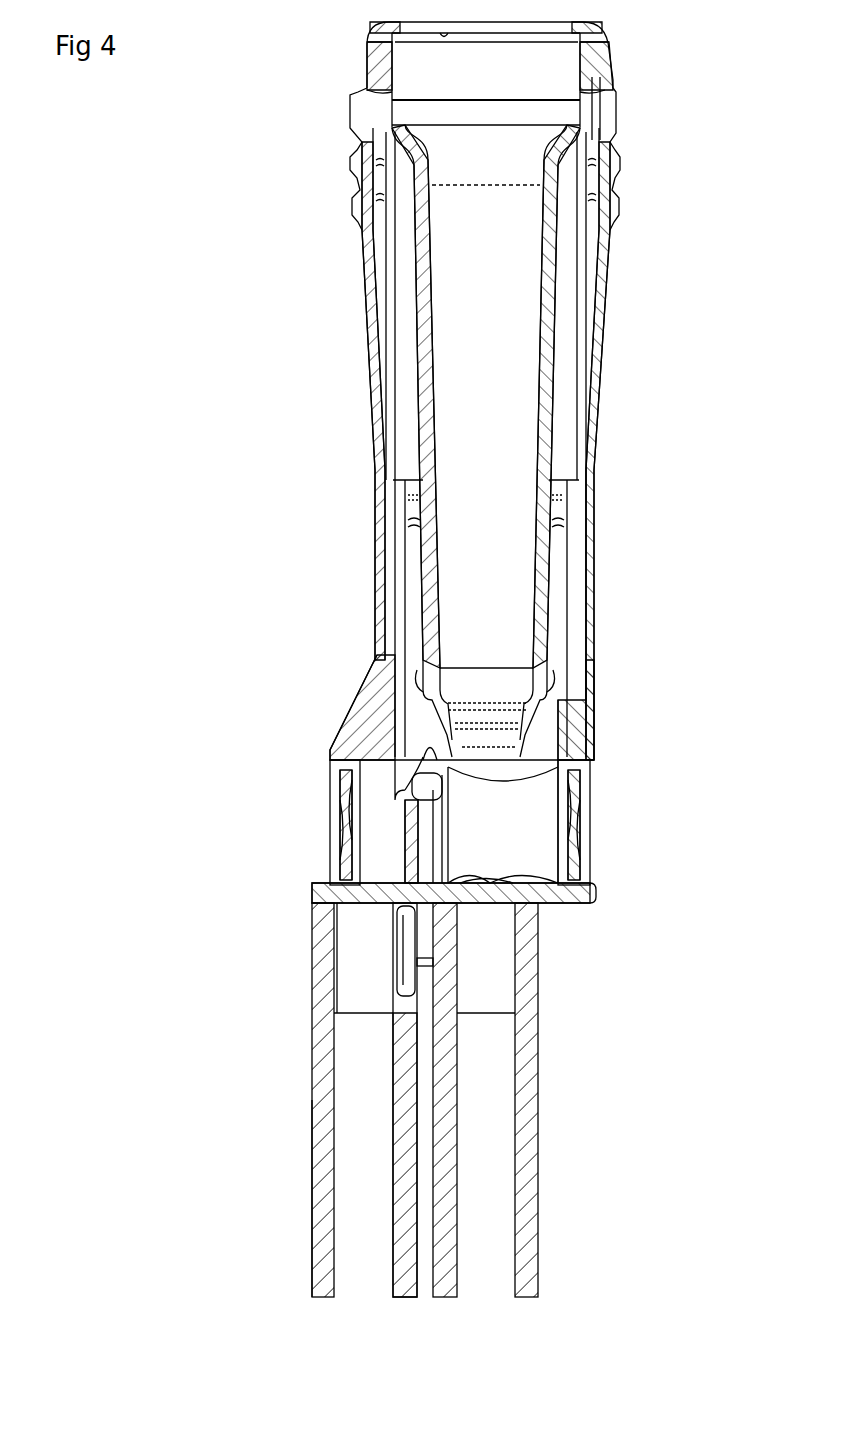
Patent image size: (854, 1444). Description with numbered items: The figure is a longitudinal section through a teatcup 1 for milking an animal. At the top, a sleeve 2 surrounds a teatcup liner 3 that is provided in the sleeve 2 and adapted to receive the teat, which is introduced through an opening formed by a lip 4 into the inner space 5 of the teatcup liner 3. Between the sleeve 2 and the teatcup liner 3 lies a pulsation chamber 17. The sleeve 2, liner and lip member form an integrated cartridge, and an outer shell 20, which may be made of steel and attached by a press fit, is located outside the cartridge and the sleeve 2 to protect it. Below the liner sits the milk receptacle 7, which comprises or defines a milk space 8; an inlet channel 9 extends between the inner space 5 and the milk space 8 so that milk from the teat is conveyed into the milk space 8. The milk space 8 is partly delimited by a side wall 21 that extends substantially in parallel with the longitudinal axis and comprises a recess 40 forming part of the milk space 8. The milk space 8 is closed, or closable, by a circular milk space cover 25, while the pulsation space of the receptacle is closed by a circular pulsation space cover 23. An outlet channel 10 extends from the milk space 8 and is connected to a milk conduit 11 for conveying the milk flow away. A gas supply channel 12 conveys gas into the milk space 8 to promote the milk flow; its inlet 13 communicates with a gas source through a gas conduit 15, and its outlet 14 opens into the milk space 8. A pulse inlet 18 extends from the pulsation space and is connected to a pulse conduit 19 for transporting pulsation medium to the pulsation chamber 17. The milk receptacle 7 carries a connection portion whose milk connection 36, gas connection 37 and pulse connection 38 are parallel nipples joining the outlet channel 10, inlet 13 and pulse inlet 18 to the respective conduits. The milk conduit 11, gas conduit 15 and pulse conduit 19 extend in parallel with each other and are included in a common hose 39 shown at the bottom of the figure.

The teatcup 1 is at (337, 200).
The sleeve 2 is at (385, 276).
The teatcup liner 3 is at (420, 353).
The lip 4 is at (522, 33).
The inner space 5 is at (496, 478).
The milk receptacle 7 is at (388, 698).
The milk space 8 is at (502, 849).
The inlet channel 9 is at (487, 732).
The outlet channel 10 is at (497, 981).
The milk conduit 11 is at (490, 1083).
The gas supply channel 12 is at (423, 825).
The inlet 13 is at (410, 967).
The outlet 14 is at (405, 790).
The gas conduit 15 is at (425, 1230).
The pulsation chamber 17 is at (418, 482).
The pulse inlet 18 is at (353, 1013).
The pulse conduit 19 is at (362, 1180).
The outer shell 20 is at (373, 390).
The side wall 21 is at (407, 847).
The pulsation space cover 23 is at (333, 793).
The milk space cover 25 is at (590, 778).
The milk connection 36 is at (522, 980).
The gas connection 37 is at (440, 922).
The pulse connection 38 is at (327, 942).
The common hose 39 is at (318, 1135).
The recess 40 is at (447, 792).